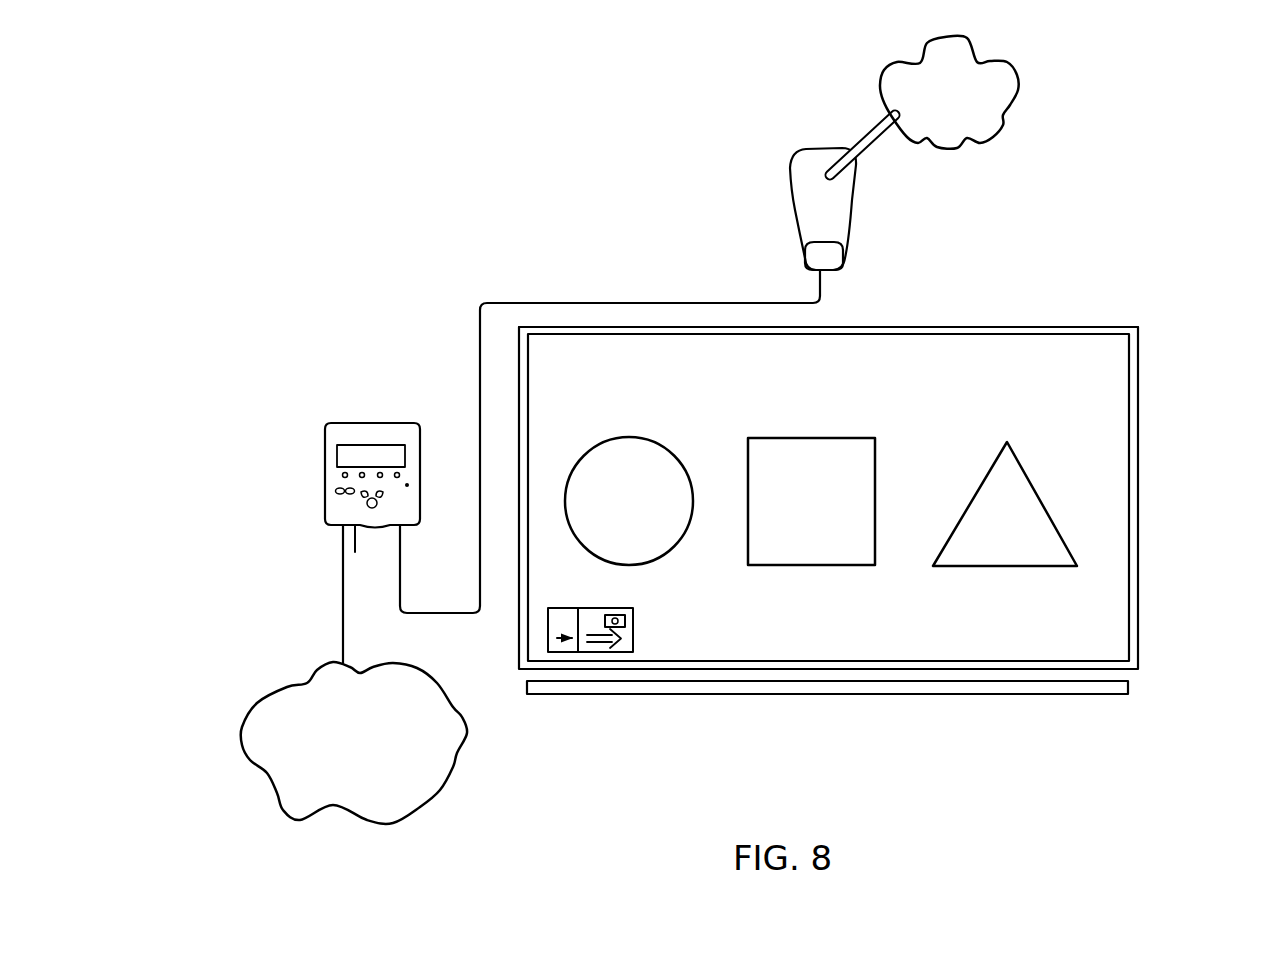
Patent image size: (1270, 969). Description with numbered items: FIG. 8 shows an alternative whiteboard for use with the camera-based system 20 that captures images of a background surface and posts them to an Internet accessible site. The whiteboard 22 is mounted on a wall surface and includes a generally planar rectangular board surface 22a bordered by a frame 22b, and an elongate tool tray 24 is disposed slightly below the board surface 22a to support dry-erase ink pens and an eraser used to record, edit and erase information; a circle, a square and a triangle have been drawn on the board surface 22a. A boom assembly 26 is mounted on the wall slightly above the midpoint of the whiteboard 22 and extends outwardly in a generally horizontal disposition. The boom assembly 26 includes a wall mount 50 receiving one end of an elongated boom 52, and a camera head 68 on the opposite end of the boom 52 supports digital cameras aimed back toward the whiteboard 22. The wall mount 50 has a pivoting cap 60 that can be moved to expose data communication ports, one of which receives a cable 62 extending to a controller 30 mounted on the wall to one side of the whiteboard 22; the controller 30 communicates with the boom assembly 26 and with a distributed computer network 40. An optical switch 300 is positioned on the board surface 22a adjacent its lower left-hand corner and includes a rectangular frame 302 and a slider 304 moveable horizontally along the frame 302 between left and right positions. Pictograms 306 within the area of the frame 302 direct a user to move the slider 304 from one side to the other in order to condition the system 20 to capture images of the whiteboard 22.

The camera-based system 20 is at (1162, 145).
The whiteboard 22 is at (1150, 403).
The board surface 22a is at (1105, 545).
The frame 22b is at (952, 327).
The tool tray 24 is at (1122, 688).
The boom assembly 26 is at (986, 83).
The controller 30 is at (357, 407).
The distributed computer network 40 is at (253, 677).
The wall mount 50 is at (835, 192).
The boom 52 is at (867, 140).
The pivoting cap 60 is at (830, 258).
The cable 62 is at (608, 303).
The camera head 68 is at (980, 102).
The optical switch 300 is at (647, 655).
The rectangular frame 302 is at (602, 653).
The slider 304 is at (565, 625).
The pictograms 306 is at (628, 632).